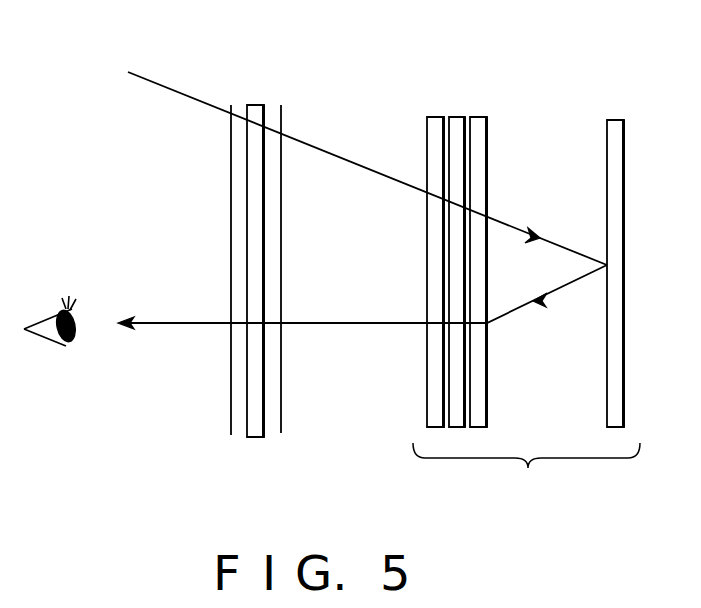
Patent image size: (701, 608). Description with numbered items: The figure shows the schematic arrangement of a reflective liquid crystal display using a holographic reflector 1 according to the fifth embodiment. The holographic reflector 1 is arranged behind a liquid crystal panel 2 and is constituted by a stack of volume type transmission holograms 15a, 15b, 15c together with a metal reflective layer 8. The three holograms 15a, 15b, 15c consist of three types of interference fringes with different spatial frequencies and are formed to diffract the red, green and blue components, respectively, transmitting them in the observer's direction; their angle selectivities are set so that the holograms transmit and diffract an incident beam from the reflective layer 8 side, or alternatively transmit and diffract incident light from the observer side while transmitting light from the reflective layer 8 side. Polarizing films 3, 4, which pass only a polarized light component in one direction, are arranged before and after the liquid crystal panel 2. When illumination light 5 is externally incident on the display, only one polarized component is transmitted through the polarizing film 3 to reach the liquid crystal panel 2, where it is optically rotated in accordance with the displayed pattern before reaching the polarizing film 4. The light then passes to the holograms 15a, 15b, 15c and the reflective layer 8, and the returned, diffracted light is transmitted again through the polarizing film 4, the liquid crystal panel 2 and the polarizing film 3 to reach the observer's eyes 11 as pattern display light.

The holographic reflector 1 is at (526, 474).
The liquid crystal panel 2 is at (255, 440).
The polarizing film 3 is at (231, 438).
The polarizing film 4 is at (282, 436).
The illumination light 5 is at (125, 70).
The metal reflective layer 8 is at (617, 118).
The observer's eyes 11 is at (52, 348).
The volume type transmission hologram 15a is at (434, 115).
The volume type transmission hologram 15b is at (458, 115).
The volume type transmission hologram 15c is at (486, 115).